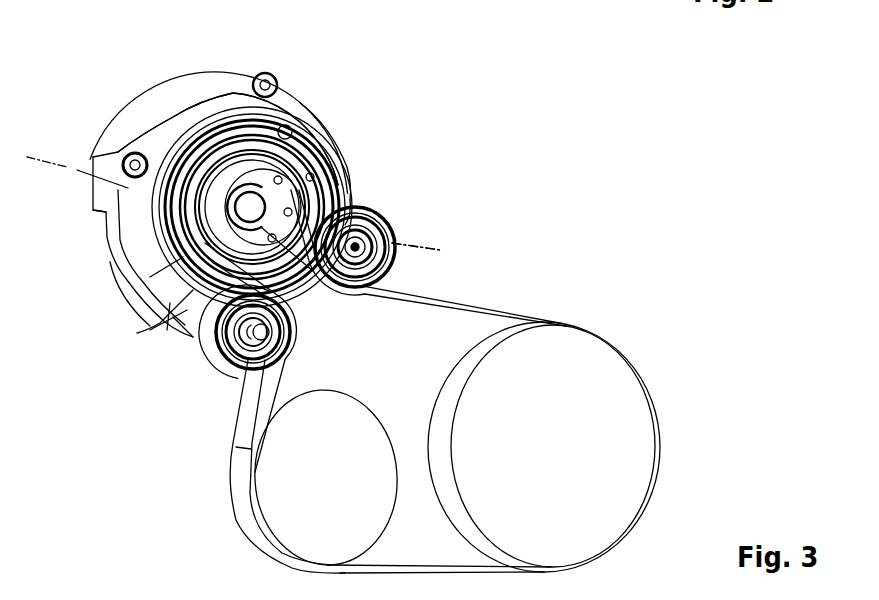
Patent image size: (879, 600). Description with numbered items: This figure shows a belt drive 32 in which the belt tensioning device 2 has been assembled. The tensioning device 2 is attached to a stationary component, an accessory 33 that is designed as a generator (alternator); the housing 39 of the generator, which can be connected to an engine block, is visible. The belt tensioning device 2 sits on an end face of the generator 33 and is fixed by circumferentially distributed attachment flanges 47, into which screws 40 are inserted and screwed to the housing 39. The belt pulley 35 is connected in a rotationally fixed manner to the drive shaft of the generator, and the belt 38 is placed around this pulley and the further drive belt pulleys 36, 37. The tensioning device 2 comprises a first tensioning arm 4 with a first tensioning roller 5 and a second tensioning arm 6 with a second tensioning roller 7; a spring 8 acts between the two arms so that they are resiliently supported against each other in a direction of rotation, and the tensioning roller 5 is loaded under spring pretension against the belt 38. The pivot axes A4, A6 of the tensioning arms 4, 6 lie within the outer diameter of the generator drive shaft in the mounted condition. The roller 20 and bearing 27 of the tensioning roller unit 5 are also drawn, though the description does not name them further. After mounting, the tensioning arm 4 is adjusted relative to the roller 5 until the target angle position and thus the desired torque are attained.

The belt tensioning device 2 is at (175, 48).
The belt drive 32 is at (466, 108).
The accessory 33 is at (127, 118).
The housing 39 is at (113, 253).
The spring 8 is at (300, 122).
The screws 40 is at (272, 74).
The attachment flanges 47 is at (130, 183).
The belt pulley 35 is at (290, 185).
The second tensioning arm 6 is at (313, 197).
The first tensioning arm 4 is at (160, 316).
The second tensioning roller 7 is at (374, 213).
The pivot axis A4 is at (452, 246).
The pivot axis A6 is at (416, 246).
The first tensioning roller 5 is at (213, 360).
The tensioning pulley 20 is at (245, 370).
The bearing 27 is at (262, 332).
The belt 38 is at (466, 301).
The drive belt pulley 36 is at (600, 357).
The drive belt pulley 37 is at (367, 417).